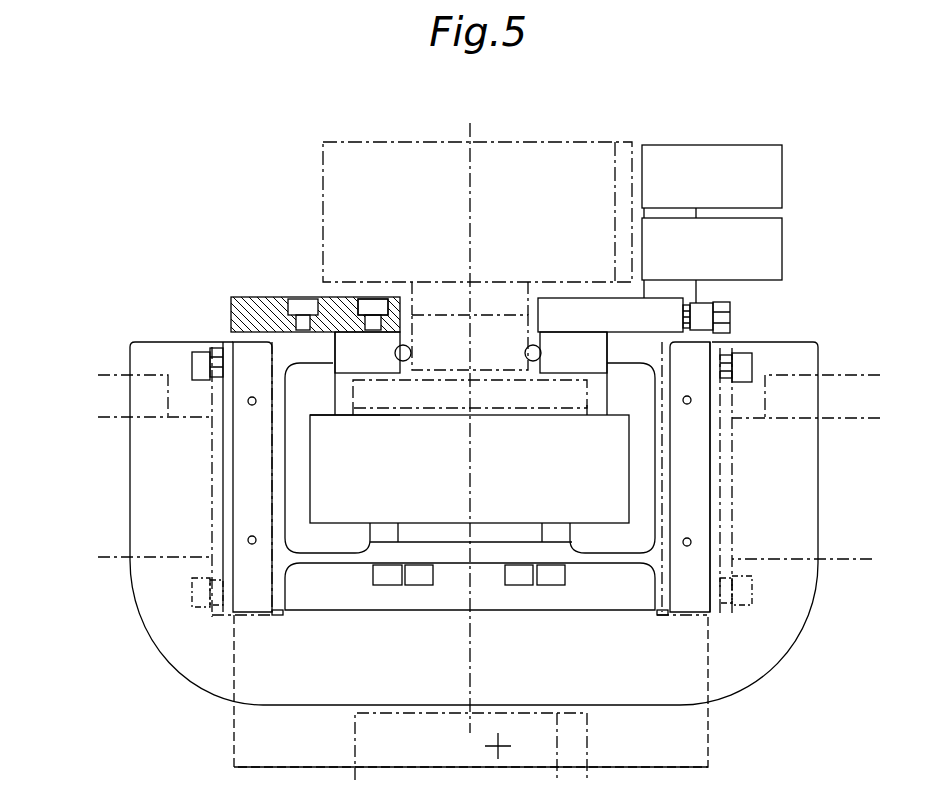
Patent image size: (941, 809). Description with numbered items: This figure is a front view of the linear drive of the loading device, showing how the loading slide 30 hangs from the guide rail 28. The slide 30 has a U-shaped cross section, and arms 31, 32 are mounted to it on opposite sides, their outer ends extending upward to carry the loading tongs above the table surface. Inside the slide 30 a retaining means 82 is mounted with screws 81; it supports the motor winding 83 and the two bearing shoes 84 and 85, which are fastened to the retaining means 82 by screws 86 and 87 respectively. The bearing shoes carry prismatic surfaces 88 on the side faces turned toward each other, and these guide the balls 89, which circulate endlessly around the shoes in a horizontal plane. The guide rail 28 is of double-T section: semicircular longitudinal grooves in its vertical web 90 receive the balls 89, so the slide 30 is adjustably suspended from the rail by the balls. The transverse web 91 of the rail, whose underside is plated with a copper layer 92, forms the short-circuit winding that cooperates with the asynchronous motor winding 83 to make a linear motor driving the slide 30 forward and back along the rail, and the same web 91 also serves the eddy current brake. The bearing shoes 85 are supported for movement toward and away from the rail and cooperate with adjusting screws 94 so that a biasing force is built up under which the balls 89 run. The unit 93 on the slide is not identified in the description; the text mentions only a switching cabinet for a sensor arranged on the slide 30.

The guide rail 28 is at (522, 142).
The slide 30 is at (822, 493).
The arm 31 is at (112, 373).
The arm 32 is at (867, 375).
The screws 81 is at (200, 350).
The retaining means 82 is at (280, 555).
The motor winding 83 is at (547, 481).
The bearing shoe 84 is at (354, 365).
The bearing shoe 85 is at (573, 336).
The screws 86 is at (302, 302).
The screws 87 is at (372, 303).
The prismatic surfaces 88 is at (541, 357).
The balls 89 is at (525, 353).
The vertical web 90 is at (412, 295).
The transverse web 91 is at (362, 393).
The copper layer 92 is at (366, 414).
The switch unit 93 is at (778, 182).
The adjusting screws 94 is at (725, 322).